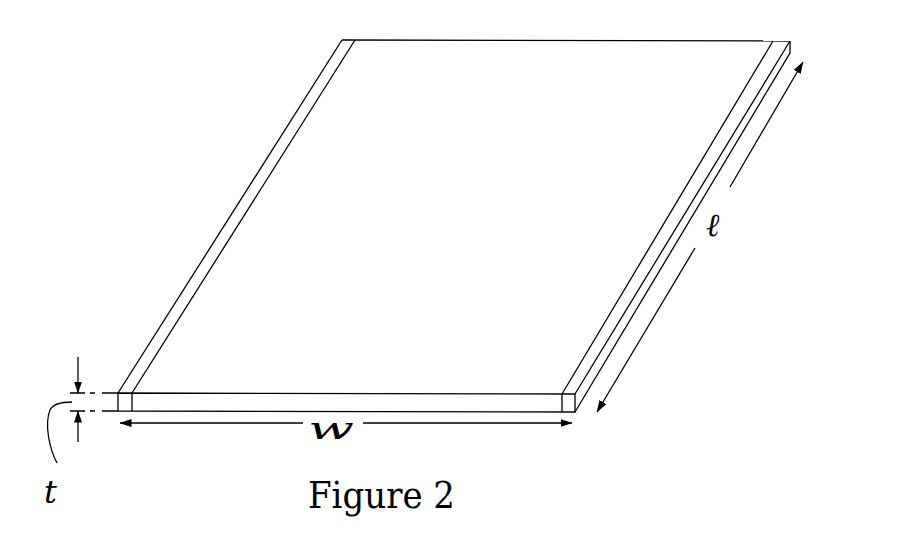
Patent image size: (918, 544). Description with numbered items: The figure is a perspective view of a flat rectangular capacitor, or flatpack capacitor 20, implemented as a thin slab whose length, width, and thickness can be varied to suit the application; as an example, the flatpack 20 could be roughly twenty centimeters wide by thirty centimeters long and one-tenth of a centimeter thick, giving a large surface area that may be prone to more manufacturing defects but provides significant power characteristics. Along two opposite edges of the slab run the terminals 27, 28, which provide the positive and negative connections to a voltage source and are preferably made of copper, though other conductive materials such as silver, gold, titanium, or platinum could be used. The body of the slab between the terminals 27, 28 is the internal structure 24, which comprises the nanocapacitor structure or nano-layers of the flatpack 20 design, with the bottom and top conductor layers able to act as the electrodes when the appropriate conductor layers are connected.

The flatpack capacitor 20 is at (156, 171).
The internal structure 24 is at (238, 403).
The terminal 27 is at (262, 167).
The terminal 28 is at (791, 58).